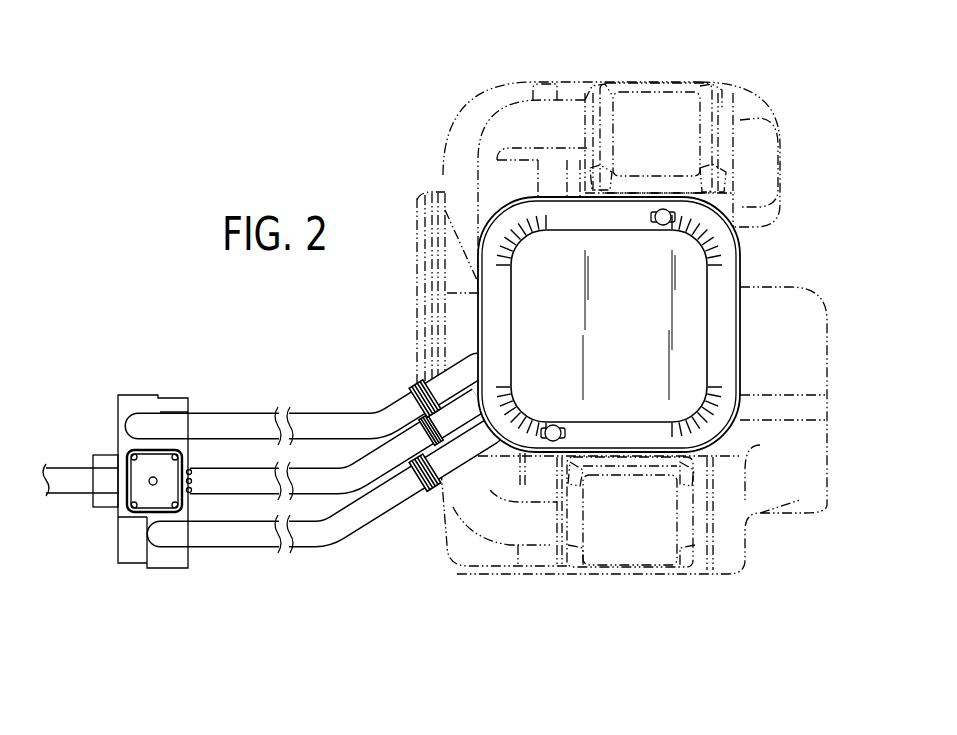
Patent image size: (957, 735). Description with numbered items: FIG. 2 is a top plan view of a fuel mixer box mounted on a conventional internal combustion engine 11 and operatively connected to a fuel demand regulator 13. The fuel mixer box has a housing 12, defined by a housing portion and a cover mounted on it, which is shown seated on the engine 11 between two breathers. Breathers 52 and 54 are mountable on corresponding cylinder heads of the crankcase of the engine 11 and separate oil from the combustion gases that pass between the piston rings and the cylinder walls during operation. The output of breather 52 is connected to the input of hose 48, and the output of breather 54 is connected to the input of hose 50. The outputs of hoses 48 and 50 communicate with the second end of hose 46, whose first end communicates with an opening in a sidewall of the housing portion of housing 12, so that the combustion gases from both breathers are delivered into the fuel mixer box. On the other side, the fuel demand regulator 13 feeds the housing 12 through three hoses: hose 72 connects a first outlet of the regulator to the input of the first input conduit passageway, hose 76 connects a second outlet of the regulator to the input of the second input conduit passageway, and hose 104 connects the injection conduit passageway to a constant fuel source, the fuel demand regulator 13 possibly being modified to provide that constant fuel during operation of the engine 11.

The internal combustion engine 11 is at (738, 564).
The housing 12 is at (741, 262).
The fuel demand regulator 13 is at (140, 396).
The hose 46 is at (432, 326).
The hose 48 is at (443, 162).
The hose 50 is at (450, 540).
The breather 52 is at (656, 95).
The breather 54 is at (632, 570).
The hose 72 is at (437, 383).
The hose 76 is at (458, 458).
The hose 104 is at (417, 396).